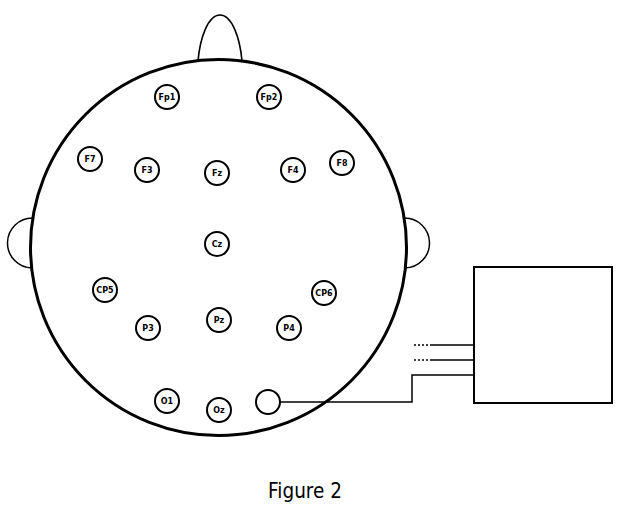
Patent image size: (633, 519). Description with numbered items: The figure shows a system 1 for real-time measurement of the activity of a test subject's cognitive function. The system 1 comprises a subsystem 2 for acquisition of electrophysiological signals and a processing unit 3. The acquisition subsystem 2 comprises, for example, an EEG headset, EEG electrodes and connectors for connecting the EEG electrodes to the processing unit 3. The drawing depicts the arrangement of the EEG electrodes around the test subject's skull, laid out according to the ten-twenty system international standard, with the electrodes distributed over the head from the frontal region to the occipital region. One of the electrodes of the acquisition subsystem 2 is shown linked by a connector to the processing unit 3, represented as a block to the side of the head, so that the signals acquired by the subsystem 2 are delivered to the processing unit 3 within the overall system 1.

The system 1 is at (446, 298).
The acquisition subsystem 2 is at (281, 406).
The processing unit 3 is at (537, 387).